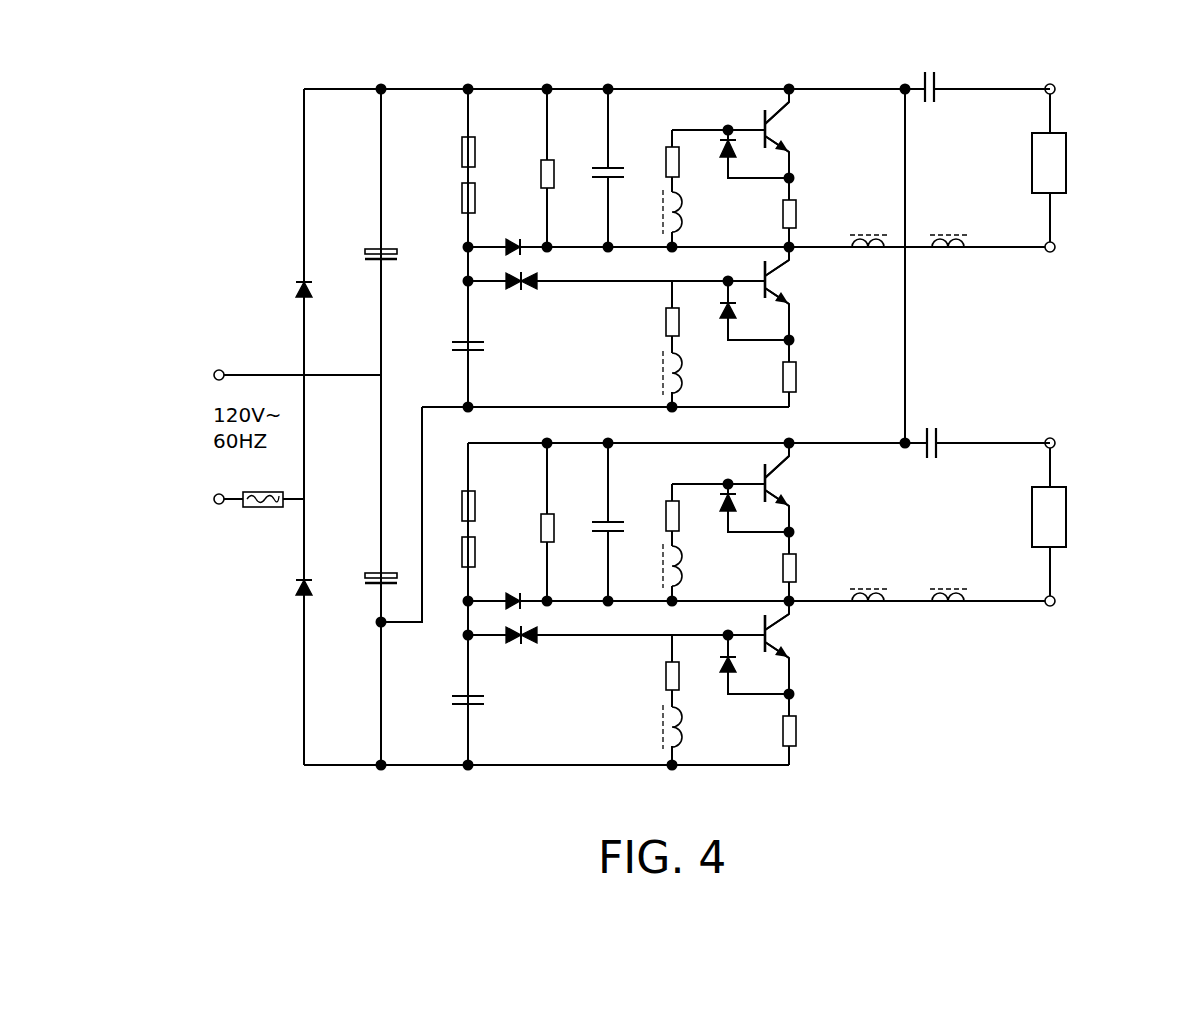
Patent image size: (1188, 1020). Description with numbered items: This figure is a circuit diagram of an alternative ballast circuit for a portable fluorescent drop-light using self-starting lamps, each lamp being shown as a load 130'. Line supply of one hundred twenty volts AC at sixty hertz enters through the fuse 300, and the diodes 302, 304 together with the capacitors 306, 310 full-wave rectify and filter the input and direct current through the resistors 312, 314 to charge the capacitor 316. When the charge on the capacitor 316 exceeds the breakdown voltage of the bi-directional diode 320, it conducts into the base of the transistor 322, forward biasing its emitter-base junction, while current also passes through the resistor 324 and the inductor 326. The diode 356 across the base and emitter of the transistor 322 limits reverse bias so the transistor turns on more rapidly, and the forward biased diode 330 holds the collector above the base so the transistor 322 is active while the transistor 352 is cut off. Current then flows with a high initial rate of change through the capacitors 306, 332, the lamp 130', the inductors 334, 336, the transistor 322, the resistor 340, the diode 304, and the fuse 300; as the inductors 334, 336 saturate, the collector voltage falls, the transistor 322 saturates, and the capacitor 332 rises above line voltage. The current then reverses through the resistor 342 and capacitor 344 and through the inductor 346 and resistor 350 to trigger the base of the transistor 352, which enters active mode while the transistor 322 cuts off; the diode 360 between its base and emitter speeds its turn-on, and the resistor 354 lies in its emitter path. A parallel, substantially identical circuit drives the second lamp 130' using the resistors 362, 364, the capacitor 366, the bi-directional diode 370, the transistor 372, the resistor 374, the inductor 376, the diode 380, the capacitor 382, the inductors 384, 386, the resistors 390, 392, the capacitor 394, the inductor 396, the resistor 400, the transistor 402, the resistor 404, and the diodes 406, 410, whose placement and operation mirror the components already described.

The lamp load 130' is at (1086, 340).
The fuse 300 is at (253, 508).
The diode 302 is at (294, 288).
The diode 304 is at (295, 583).
The capacitor 306 is at (363, 259).
The capacitor 310 is at (363, 578).
The resistor 312 is at (461, 152).
The resistor 314 is at (461, 207).
The capacitor 316 is at (486, 347).
The bi-directional diode 320 is at (516, 290).
The transistor 322 is at (775, 279).
The resistor 324 is at (665, 323).
The inductor 326 is at (663, 376).
The diode 330 is at (515, 240).
The capacitor 332 is at (928, 68).
The inductor 334 is at (947, 253).
The inductor 336 is at (868, 257).
The resistor 340 is at (797, 370).
The resistor 342 is at (541, 173).
The capacitor 344 is at (591, 172).
The inductor 346 is at (681, 213).
The resistor 350 is at (679, 166).
The transistor 352 is at (778, 126).
The resistor 354 is at (797, 214).
The diode 356 is at (725, 310).
The diode 360 is at (722, 146).
The resistor 362 is at (461, 508).
The resistor 364 is at (461, 556).
The capacitor 366 is at (486, 701).
The bi-directional diode 370 is at (516, 644).
The transistor 372 is at (775, 633).
The resistor 374 is at (665, 677).
The inductor 376 is at (663, 730).
The diode 380 is at (515, 594).
The capacitor 382 is at (930, 427).
The inductor 384 is at (949, 607).
The inductor 386 is at (868, 611).
The resistor 390 is at (797, 724).
The resistor 392 is at (541, 527).
The capacitor 394 is at (591, 526).
The inductor 396 is at (681, 567).
The resistor 400 is at (679, 520).
The transistor 402 is at (780, 481).
The resistor 404 is at (799, 571).
The diode 406 is at (725, 664).
The diode 410 is at (722, 500).